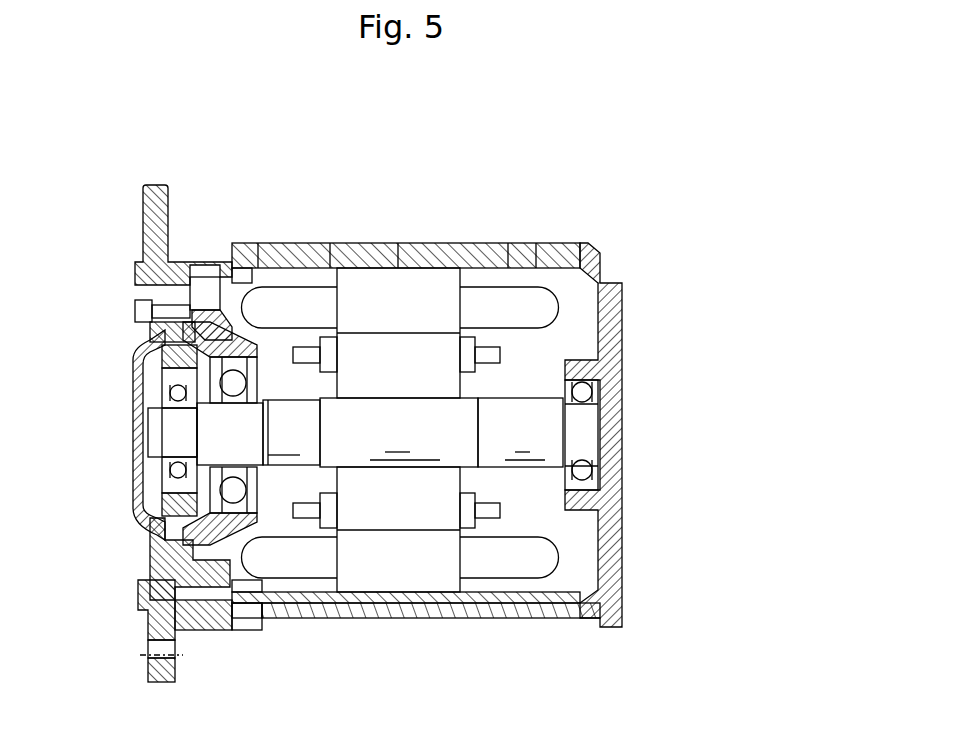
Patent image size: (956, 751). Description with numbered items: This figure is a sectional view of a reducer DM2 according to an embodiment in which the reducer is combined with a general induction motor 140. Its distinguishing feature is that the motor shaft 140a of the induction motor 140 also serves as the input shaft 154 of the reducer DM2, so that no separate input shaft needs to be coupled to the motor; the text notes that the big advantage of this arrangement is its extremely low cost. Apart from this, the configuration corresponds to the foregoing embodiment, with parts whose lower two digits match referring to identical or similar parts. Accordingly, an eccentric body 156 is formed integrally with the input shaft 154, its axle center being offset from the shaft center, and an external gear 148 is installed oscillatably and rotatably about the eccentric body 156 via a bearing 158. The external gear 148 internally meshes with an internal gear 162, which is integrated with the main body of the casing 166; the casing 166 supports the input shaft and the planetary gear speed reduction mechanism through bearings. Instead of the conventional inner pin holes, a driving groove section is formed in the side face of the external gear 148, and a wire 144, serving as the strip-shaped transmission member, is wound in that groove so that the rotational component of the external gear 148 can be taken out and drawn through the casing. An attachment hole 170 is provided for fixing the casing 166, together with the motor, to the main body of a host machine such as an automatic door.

The reducer DM2 is at (432, 152).
The induction motor 140 is at (445, 228).
The motor shaft 140a is at (358, 445).
The wire 144 is at (232, 330).
The casing 166 is at (155, 205).
The external gear 148 is at (158, 350).
The bearing 158 is at (162, 397).
The input shaft 154 is at (178, 435).
The eccentric body 156 is at (163, 557).
The internal gear 162 is at (177, 535).
The attachment hole 170 is at (153, 658).